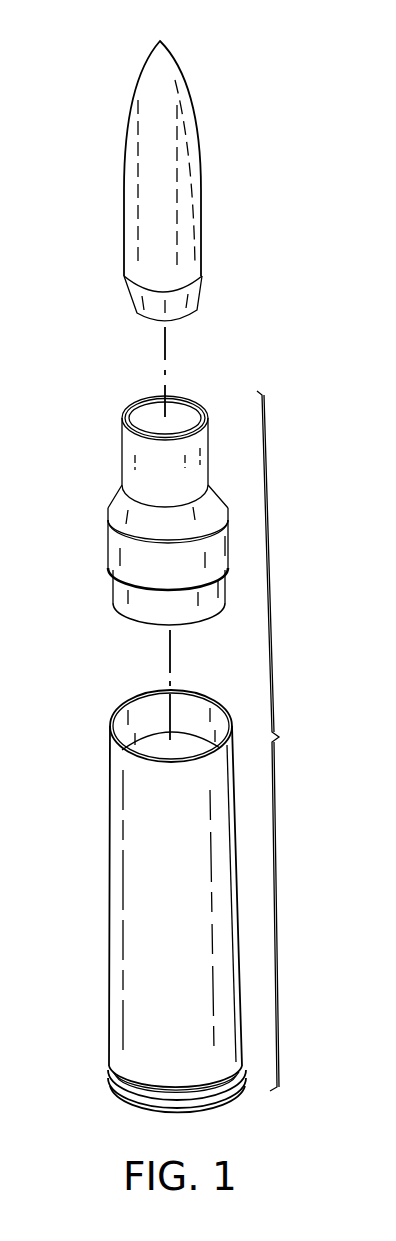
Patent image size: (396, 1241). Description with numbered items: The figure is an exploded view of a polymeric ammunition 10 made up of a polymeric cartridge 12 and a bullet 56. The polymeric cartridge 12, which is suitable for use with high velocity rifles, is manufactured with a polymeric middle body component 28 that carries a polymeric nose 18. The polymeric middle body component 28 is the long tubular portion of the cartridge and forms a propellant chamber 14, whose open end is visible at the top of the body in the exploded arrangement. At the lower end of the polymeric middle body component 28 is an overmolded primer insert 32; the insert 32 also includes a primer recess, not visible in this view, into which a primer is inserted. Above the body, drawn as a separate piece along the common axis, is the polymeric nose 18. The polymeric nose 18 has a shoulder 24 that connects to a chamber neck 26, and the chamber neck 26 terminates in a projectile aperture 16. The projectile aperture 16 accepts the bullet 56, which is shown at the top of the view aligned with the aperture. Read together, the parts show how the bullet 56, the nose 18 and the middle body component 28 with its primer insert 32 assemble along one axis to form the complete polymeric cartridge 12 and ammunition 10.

The polymeric ammunition 10 is at (303, 62).
The polymeric cartridge 12 is at (285, 741).
The propellant chamber 14 is at (192, 722).
The projectile aperture 16 is at (190, 403).
The polymeric nose 18 is at (107, 542).
The shoulder 24 is at (112, 500).
The chamber neck 26 is at (127, 458).
The polymeric middle body component 28 is at (108, 892).
The primer insert 32 is at (105, 1105).
The bullet 56 is at (197, 217).